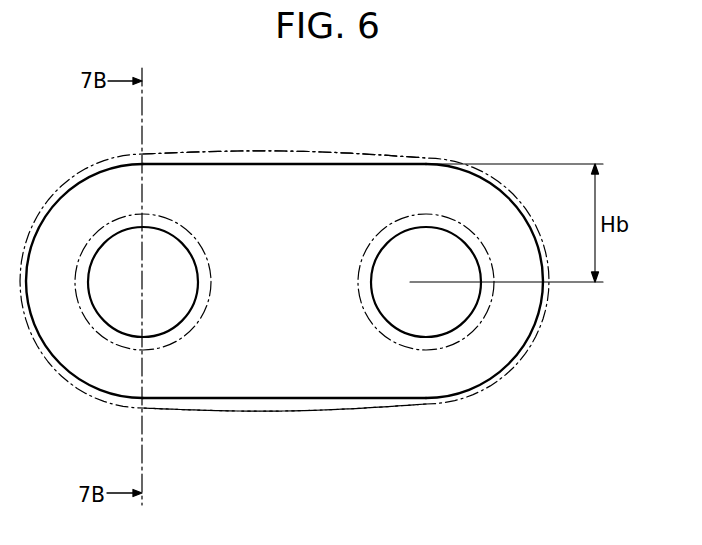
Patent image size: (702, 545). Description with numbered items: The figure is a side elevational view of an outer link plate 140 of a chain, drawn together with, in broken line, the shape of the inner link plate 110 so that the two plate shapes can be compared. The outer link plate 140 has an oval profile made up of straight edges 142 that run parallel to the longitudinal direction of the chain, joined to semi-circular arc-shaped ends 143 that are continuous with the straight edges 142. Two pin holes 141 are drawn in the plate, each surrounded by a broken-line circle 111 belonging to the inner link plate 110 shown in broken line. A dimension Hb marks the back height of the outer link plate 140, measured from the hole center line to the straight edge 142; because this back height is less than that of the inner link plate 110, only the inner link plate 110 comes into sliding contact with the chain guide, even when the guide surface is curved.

The inner link plate 110 is at (231, 152).
The outer link plate 140 is at (309, 182).
The through holes 141 is at (173, 316).
The straight edges 142 is at (396, 157).
The semi-circular arc-shaped ends 143 is at (44, 349).
The hole peripheries 111 is at (98, 331).